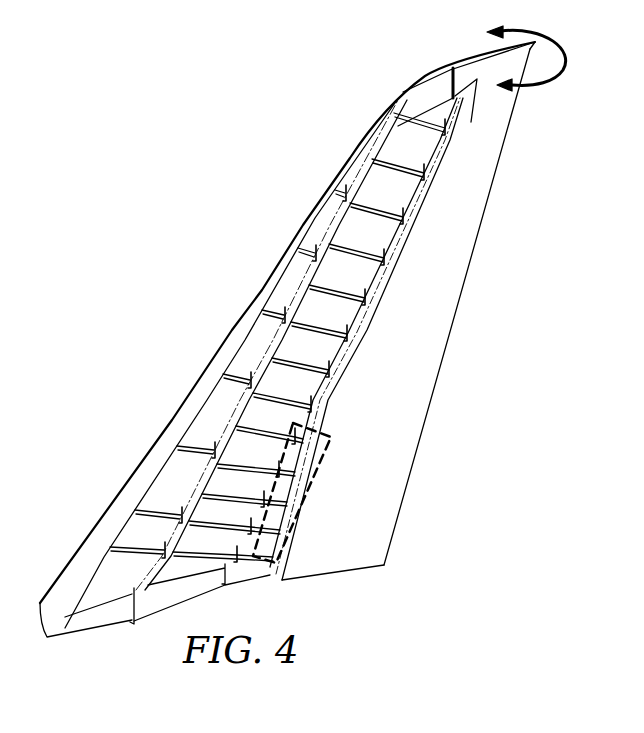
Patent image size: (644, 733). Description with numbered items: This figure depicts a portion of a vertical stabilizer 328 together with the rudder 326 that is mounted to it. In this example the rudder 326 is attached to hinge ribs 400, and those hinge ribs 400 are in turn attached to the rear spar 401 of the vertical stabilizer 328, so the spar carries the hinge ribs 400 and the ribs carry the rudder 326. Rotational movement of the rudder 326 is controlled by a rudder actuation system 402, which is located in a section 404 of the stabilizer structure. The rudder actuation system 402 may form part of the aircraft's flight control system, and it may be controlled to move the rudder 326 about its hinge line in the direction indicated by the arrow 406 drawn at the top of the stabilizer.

The rudder 326 is at (444, 357).
The vertical stabilizer 328 is at (222, 342).
The hinge ribs 400 is at (328, 393).
The rear spar 401 is at (310, 462).
The rudder actuation system 402 is at (318, 500).
The section 404 is at (296, 519).
The arrow 406 is at (573, 58).